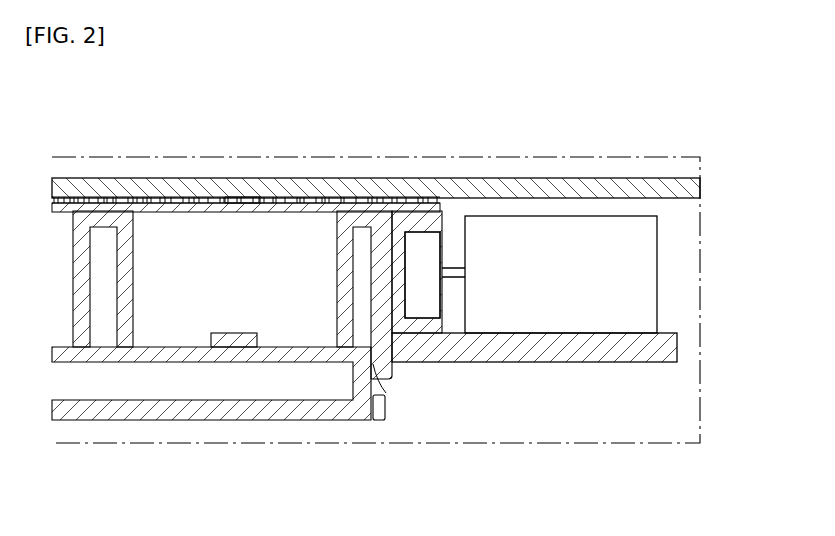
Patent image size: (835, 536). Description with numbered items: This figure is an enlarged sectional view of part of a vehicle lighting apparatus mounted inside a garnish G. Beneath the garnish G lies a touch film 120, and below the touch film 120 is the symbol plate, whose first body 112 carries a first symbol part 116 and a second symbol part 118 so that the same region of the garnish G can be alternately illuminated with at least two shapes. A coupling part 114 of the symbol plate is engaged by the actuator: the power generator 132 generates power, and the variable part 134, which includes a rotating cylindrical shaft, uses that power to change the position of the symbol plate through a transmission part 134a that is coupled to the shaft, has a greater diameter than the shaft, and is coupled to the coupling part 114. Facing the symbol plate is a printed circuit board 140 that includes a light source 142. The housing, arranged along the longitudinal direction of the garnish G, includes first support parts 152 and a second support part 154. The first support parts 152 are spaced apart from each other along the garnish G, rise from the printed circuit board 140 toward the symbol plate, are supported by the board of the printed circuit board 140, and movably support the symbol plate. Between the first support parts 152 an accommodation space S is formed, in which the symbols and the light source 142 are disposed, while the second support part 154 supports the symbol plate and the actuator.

The garnish G is at (627, 178).
The first body 112 is at (410, 205).
The coupling part 114 is at (440, 220).
The first symbol part 116 is at (240, 212).
The second symbol part 118 is at (242, 200).
The touch film 120 is at (160, 190).
The power generator 132 is at (638, 273).
The variable part 134 is at (455, 292).
The transmission part 134a is at (418, 312).
The printed circuit board 140 is at (300, 352).
The light source 142 is at (233, 340).
The first support part 152 is at (107, 220).
The second support part 154 is at (620, 348).
The accommodation space S is at (172, 310).